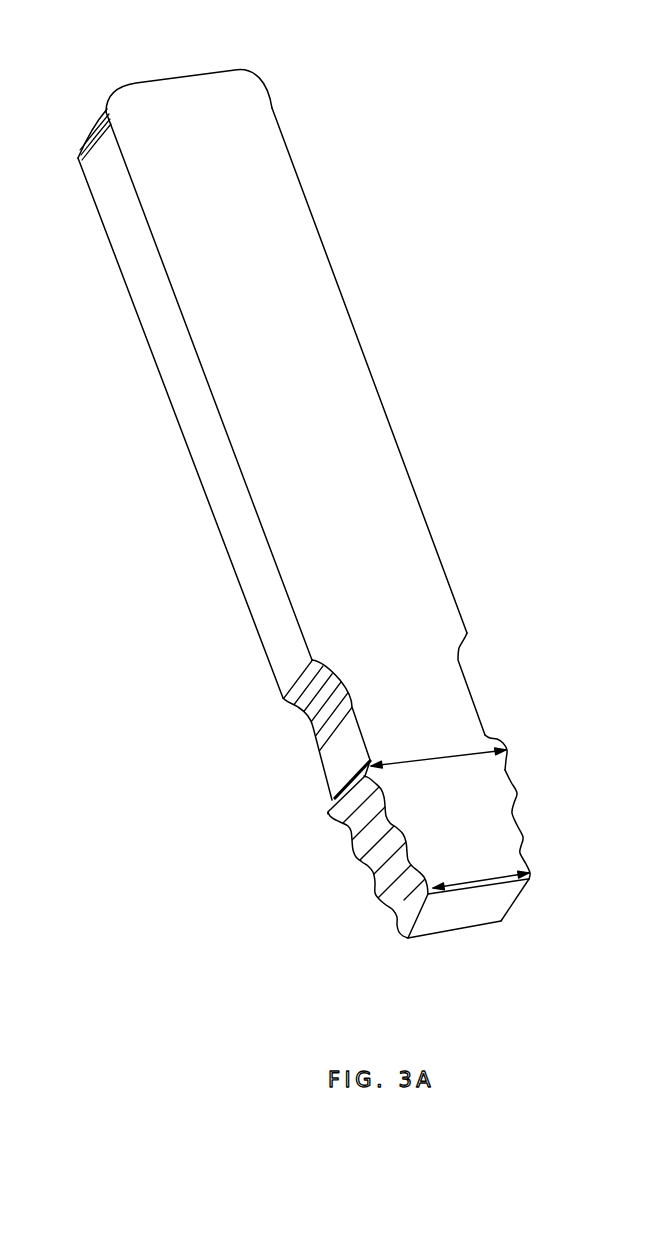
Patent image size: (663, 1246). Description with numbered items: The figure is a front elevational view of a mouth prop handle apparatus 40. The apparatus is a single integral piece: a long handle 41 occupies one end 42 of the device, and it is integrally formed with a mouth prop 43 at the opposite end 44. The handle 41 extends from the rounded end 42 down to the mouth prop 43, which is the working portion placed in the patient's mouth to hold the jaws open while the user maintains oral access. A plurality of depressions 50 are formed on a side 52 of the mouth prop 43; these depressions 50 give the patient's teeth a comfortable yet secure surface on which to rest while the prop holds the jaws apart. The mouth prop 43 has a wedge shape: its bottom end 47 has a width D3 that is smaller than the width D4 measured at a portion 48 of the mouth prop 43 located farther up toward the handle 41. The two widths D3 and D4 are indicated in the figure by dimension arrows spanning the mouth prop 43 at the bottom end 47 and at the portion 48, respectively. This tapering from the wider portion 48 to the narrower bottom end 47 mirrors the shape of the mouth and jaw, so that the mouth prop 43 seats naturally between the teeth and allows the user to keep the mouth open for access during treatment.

The mouth prop handle apparatus 40 is at (68, 57).
The handle 41 is at (330, 268).
The end 42 is at (197, 73).
The mouth prop 43 is at (482, 787).
The end 44 is at (525, 887).
The bottom end 47 is at (478, 912).
The portion 48 is at (500, 738).
The depressions 50 is at (353, 807).
The side 52 is at (353, 858).
The width D3 is at (481, 874).
The width D4 is at (438, 751).